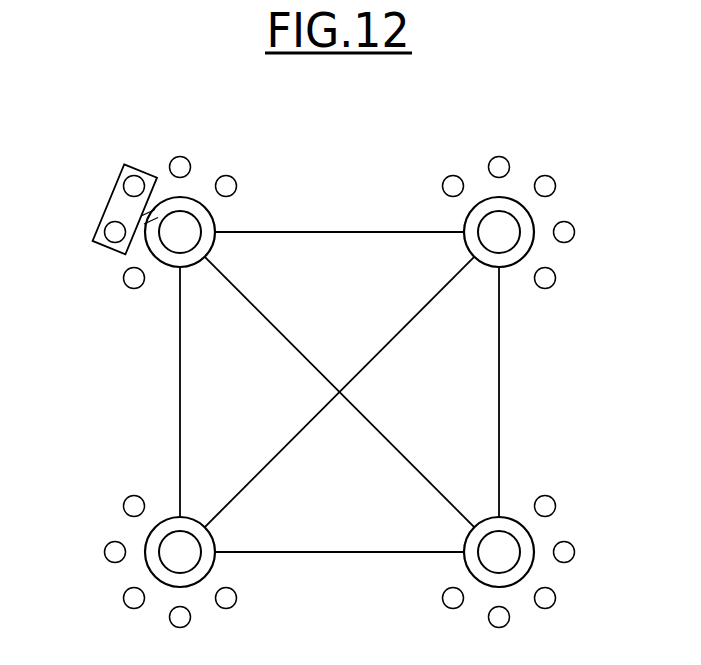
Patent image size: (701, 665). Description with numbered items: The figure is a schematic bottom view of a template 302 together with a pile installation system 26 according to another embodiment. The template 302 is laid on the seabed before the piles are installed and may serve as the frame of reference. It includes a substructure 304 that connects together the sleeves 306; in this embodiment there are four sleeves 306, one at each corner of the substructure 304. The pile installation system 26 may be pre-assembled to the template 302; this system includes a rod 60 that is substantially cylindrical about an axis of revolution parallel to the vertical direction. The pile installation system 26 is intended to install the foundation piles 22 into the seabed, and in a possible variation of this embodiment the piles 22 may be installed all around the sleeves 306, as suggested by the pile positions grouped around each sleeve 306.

The foundation piles 22 is at (226, 186).
The pile installation system 26 is at (100, 195).
The rod 60 is at (200, 224).
The template 302 is at (506, 408).
The substructure 304 is at (500, 368).
The sleeves 306 is at (167, 265).